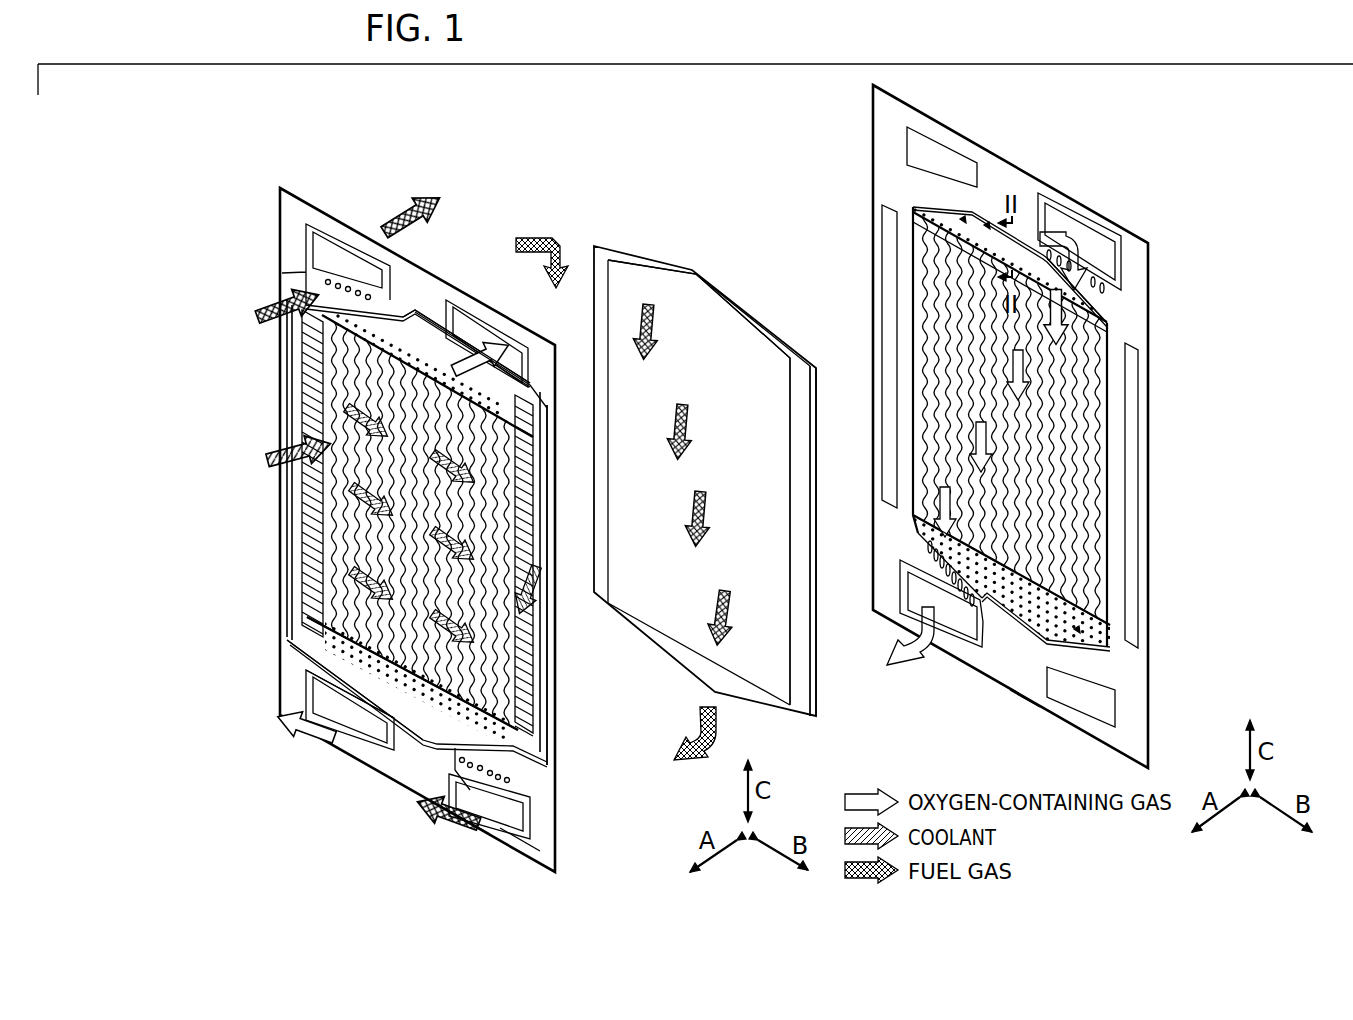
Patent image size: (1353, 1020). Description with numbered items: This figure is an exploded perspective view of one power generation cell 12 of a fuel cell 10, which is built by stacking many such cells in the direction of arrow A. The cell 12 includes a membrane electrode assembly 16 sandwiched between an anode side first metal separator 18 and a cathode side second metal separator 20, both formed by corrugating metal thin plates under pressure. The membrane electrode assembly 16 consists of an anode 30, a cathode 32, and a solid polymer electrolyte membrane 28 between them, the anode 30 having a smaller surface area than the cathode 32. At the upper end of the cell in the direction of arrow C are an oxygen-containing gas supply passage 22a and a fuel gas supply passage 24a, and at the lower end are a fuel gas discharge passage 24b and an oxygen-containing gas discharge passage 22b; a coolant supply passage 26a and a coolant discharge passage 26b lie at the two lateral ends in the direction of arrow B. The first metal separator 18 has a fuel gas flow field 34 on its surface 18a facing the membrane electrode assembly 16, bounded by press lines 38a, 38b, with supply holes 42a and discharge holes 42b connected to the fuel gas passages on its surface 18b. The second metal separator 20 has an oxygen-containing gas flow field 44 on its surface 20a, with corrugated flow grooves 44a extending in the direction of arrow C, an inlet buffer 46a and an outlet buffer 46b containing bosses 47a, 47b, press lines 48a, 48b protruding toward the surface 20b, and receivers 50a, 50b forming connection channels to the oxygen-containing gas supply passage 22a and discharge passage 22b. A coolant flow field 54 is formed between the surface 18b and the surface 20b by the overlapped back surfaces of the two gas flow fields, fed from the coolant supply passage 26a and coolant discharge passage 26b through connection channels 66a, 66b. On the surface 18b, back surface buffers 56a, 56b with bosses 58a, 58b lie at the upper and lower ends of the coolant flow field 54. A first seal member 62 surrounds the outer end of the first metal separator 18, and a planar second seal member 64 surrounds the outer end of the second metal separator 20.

The fuel cell 10 is at (492, 186).
The power generation cell 12 is at (423, 186).
The membrane electrode assembly 16 is at (593, 214).
The first metal separator 18 is at (283, 189).
The surface 18a is at (512, 848).
The surface 18b is at (481, 820).
The second metal separator 20 is at (872, 130).
The surface 20a is at (993, 670).
The surface 20b is at (1020, 700).
The oxygen-containing gas supply passage 22a is at (470, 320).
The oxygen-containing gas discharge passage 22b is at (313, 700).
The fuel gas supply passage 24a is at (340, 267).
The fuel gas discharge passage 24b is at (523, 814).
The coolant supply passage 26a is at (297, 527).
The coolant discharge passage 26b is at (548, 706).
The solid polymer electrolyte membrane 28 is at (738, 314).
The anode 30 is at (702, 335).
The cathode 32 is at (772, 340).
The fuel gas flow field 34 is at (706, 519).
The press line 38a is at (505, 387).
The press line 38b is at (358, 657).
The supply holes 42a is at (370, 283).
The discharge holes 42b is at (460, 766).
The oxygen-containing gas flow field 44 is at (922, 363).
The corrugated flow grooves 44a is at (945, 298).
The inlet buffer 46a is at (945, 215).
The outlet buffer 46b is at (1015, 598).
The bosses 47a is at (990, 229).
The bosses 47b is at (1080, 636).
The press line 48a is at (1107, 318).
The press line 48b is at (1085, 600).
The receivers 50a is at (1108, 292).
The receivers 50b is at (913, 557).
The coolant flow field 54 is at (330, 410).
The back surface buffer 56a is at (437, 342).
The back surface buffer 56b is at (373, 718).
The bosses 58a is at (500, 385).
The bosses 58b is at (383, 707).
The first seal member 62 is at (338, 748).
The second seal member 64 is at (1081, 737).
The connection channel 66a is at (312, 590).
The connection channel 66b is at (534, 672).